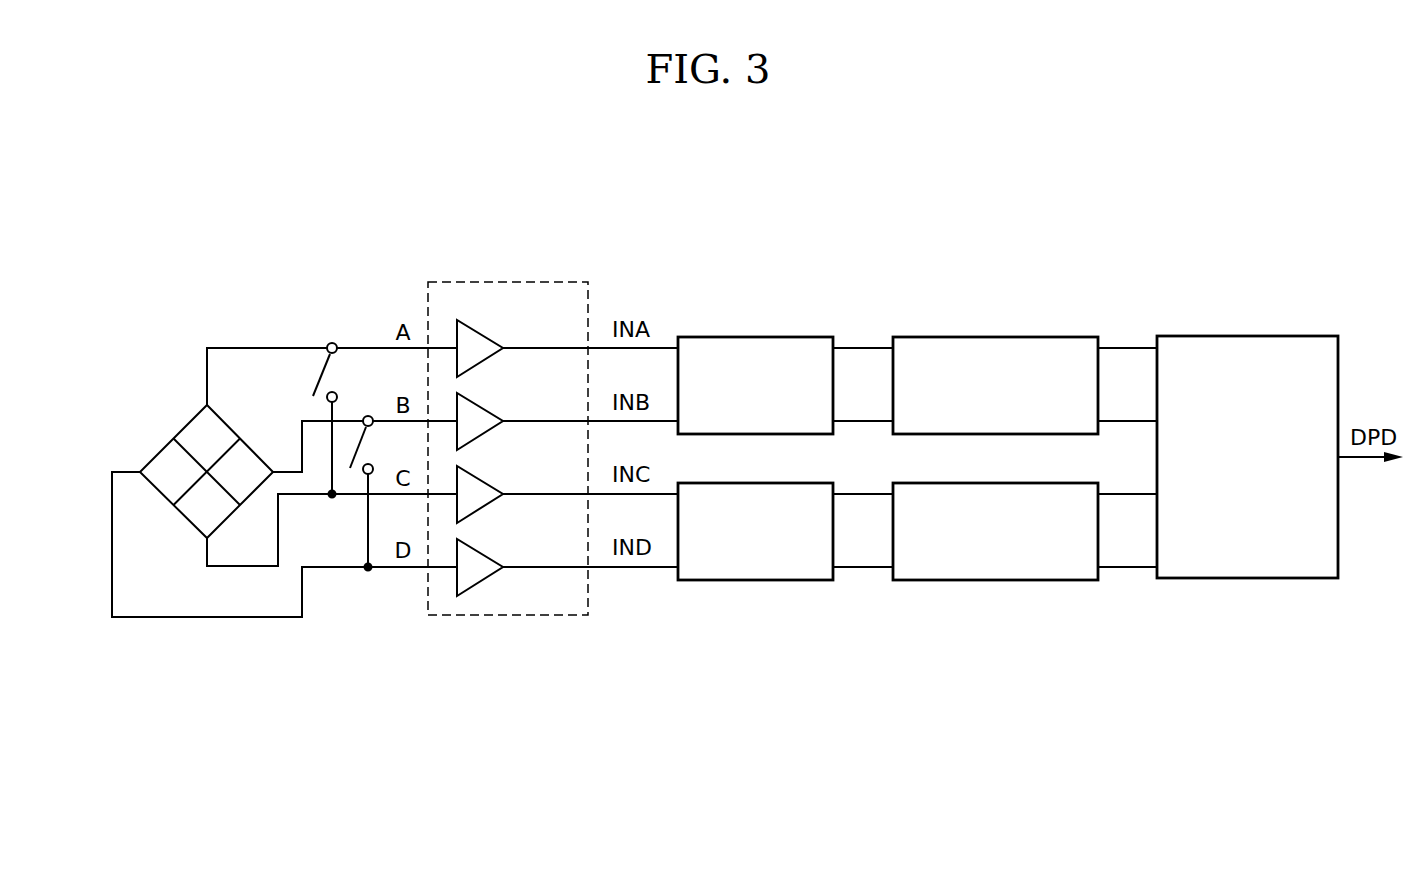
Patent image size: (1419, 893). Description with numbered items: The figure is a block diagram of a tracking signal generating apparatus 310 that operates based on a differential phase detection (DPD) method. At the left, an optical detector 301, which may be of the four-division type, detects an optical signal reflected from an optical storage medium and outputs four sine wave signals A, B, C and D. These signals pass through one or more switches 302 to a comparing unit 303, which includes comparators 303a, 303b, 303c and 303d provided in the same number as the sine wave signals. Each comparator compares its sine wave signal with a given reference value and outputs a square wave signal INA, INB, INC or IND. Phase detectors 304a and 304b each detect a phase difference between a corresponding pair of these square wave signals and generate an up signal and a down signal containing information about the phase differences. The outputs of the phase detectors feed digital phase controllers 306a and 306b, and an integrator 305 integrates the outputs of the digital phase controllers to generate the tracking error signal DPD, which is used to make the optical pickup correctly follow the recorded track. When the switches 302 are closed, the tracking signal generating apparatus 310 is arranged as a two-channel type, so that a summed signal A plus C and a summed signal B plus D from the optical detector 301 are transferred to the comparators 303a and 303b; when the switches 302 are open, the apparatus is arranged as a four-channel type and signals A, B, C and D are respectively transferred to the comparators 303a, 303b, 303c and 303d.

The optical detector 301 is at (172, 437).
The switches 302 is at (350, 452).
The comparing unit 303 is at (512, 280).
The comparator 303a is at (482, 332).
The comparator 303b is at (482, 405).
The comparator 303c is at (483, 480).
The comparator 303d is at (482, 552).
The phase detector 304a is at (757, 335).
The phase detector 304b is at (757, 481).
The integrator 305 is at (1250, 335).
The digital phase controller 306a is at (995, 335).
The digital phase controller 306b is at (995, 481).
The tracking signal generating apparatus 310 is at (1005, 252).